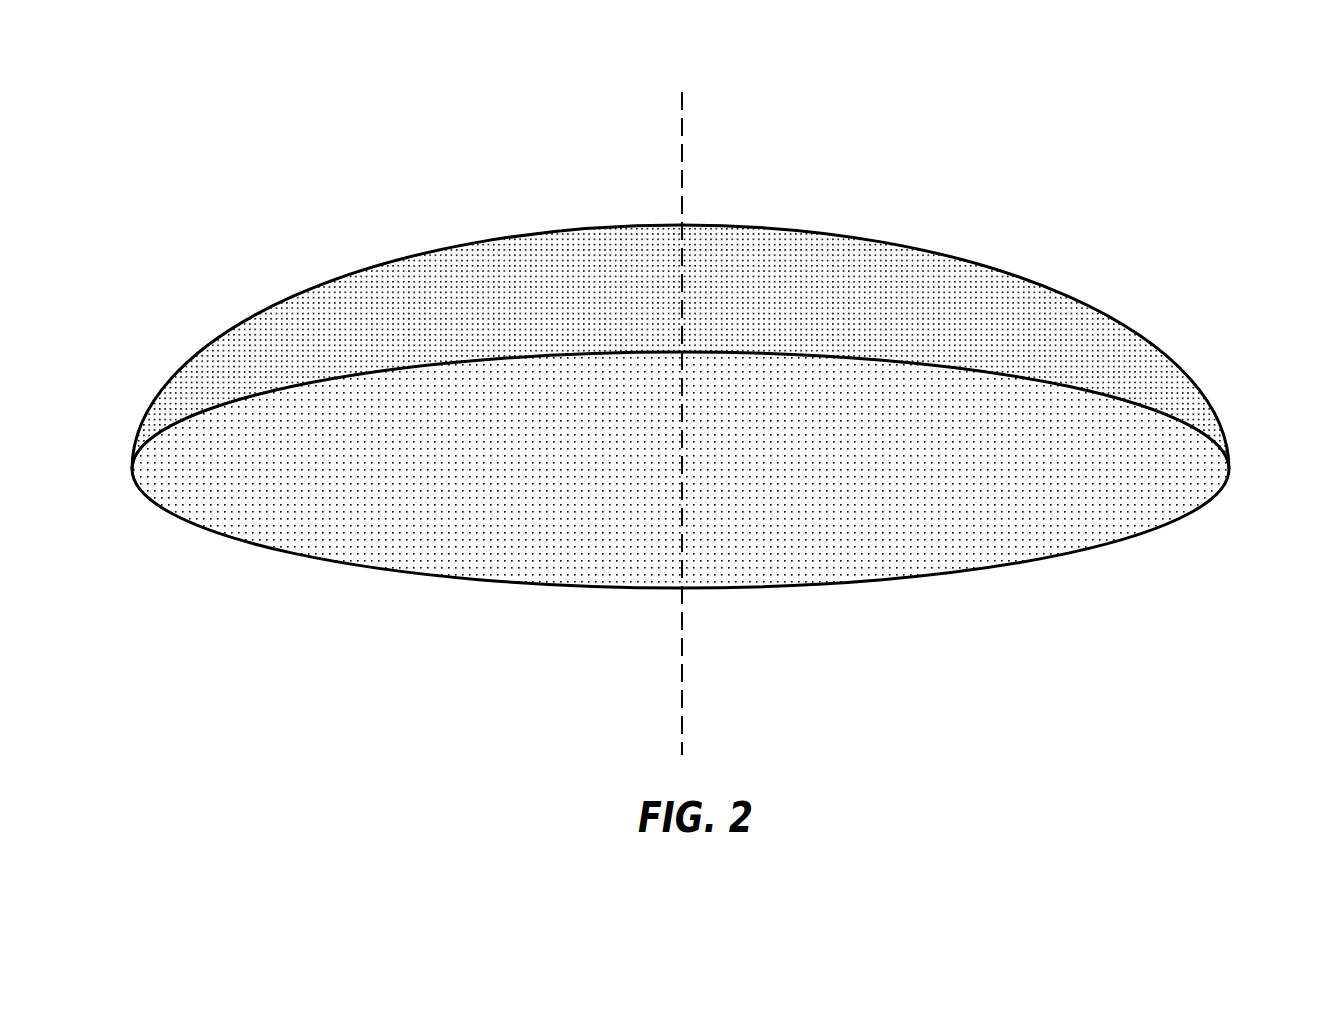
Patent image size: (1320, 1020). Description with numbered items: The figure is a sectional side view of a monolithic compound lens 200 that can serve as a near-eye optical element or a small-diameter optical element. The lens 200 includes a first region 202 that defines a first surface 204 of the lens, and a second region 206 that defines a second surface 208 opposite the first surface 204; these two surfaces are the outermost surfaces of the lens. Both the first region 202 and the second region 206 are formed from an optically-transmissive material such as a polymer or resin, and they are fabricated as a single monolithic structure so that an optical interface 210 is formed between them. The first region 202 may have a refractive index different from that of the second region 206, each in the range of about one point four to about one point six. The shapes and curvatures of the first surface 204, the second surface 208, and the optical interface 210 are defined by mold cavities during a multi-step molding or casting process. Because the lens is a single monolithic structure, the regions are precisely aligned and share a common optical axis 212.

The monolithic compound lens 200 is at (703, 396).
The first region 202 is at (579, 496).
The first surface 204 is at (843, 592).
The second region 206 is at (580, 300).
The second surface 208 is at (824, 226).
The optical interface 210 is at (829, 355).
The optical axis 212 is at (687, 92).